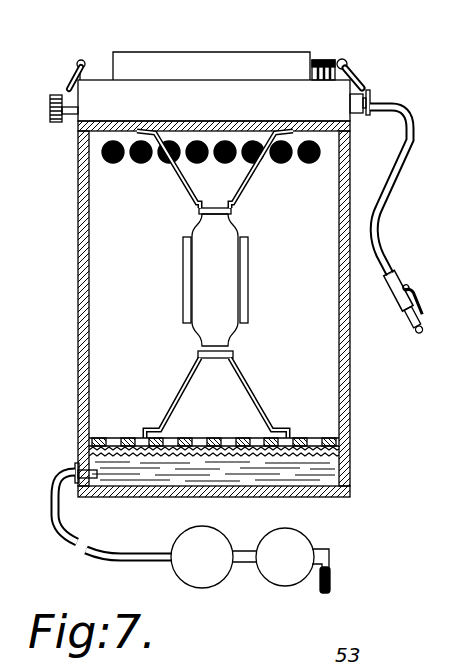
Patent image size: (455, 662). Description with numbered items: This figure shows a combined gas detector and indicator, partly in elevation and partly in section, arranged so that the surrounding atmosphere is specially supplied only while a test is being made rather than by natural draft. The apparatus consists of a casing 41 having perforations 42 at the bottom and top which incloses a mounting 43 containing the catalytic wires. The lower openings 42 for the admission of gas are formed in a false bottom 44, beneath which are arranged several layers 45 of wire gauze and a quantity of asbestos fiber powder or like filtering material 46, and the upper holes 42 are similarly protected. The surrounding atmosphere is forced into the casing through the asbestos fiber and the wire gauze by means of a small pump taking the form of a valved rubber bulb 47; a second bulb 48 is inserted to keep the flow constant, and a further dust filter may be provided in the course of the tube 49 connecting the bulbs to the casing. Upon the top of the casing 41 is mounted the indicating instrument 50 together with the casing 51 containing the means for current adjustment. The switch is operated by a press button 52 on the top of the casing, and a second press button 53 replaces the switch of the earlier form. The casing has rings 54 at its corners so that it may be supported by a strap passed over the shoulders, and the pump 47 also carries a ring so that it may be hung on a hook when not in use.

The casing 41 is at (90, 273).
The perforations 42 is at (118, 163).
The mounting 43 is at (230, 260).
The false bottom 44 is at (187, 438).
The layers of wire gauze 45 is at (340, 443).
The asbestos fiber powder 46 is at (318, 483).
The valved rubber bulb 47 is at (282, 580).
The second bulb 48 is at (203, 582).
The tube 49 is at (55, 523).
The indicating instrument 50 is at (275, 58).
The casing containing the means for current adjustment 51 is at (199, 100).
The press button 52 is at (348, 59).
The second press button 53 is at (321, 58).
The rings 54 is at (77, 74).